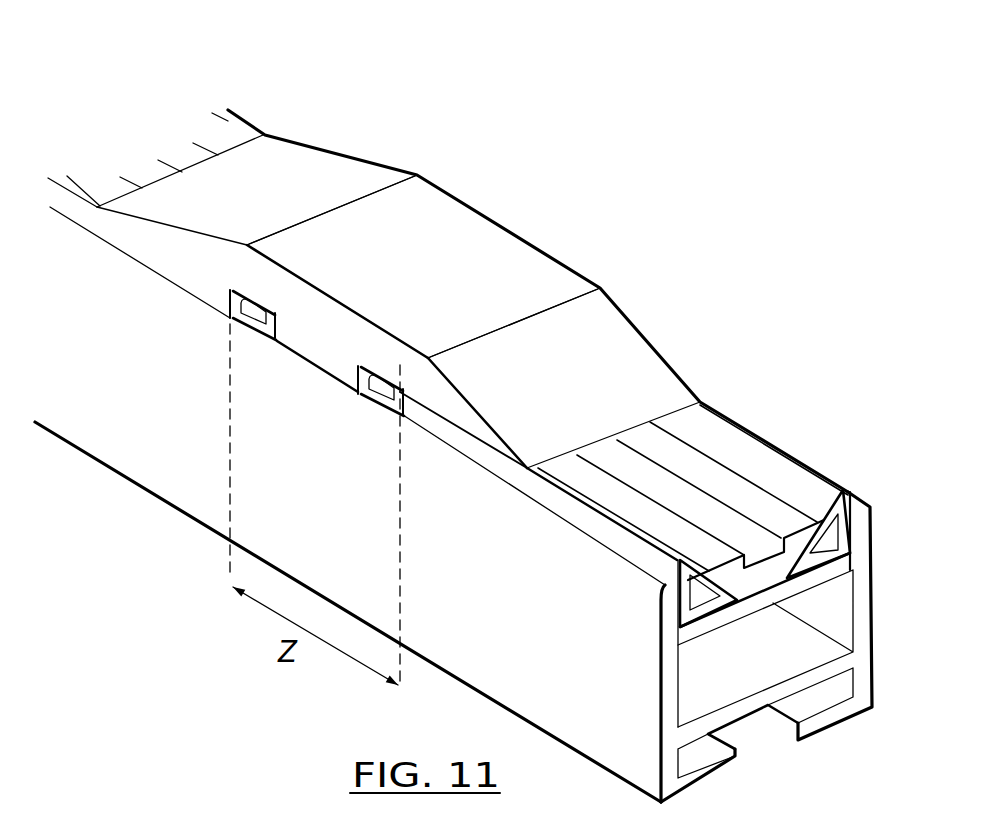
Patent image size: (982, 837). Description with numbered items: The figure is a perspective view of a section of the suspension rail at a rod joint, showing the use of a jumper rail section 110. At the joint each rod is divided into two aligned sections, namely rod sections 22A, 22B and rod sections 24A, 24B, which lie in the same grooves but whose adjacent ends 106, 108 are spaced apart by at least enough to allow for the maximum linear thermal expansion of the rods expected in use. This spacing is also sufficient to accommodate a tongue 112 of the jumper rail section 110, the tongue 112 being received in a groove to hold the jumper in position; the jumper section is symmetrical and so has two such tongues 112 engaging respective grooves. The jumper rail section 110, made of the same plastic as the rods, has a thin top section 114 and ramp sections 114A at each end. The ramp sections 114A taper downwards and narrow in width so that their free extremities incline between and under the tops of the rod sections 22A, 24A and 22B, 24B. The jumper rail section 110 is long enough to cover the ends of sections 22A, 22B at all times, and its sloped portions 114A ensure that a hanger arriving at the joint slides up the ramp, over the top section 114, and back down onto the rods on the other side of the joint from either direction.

The jumper rail section 110 is at (535, 208).
The rod section 24A is at (210, 128).
The rod section 24B is at (706, 440).
The ramp section 114A is at (349, 180).
The thin top section 114 is at (430, 210).
The rod section 22A is at (140, 247).
The rod section 22B is at (428, 423).
The adjacent end 106 is at (237, 300).
The adjacent end 108 is at (358, 378).
The tongue 112 is at (307, 342).